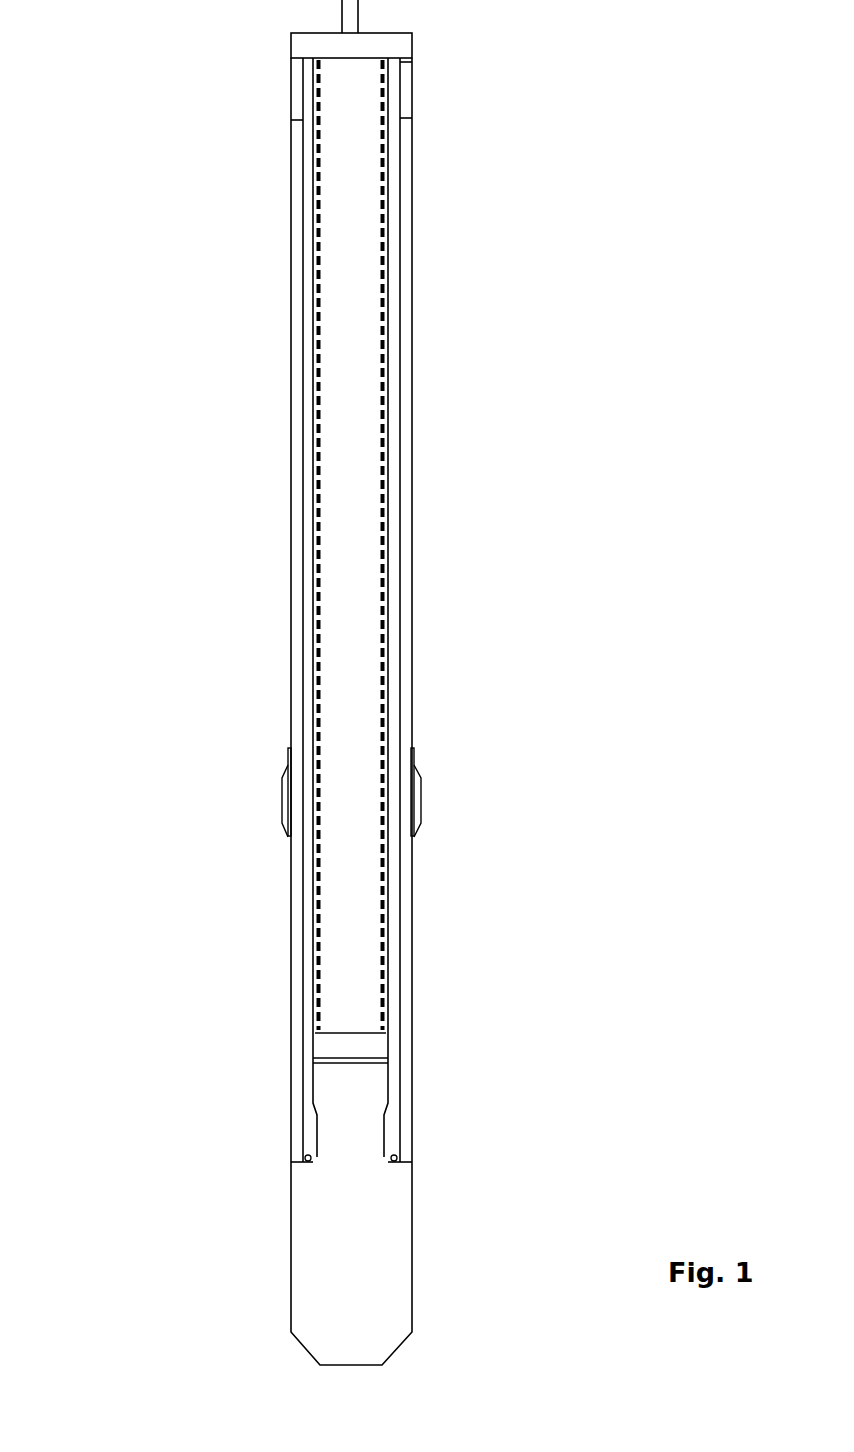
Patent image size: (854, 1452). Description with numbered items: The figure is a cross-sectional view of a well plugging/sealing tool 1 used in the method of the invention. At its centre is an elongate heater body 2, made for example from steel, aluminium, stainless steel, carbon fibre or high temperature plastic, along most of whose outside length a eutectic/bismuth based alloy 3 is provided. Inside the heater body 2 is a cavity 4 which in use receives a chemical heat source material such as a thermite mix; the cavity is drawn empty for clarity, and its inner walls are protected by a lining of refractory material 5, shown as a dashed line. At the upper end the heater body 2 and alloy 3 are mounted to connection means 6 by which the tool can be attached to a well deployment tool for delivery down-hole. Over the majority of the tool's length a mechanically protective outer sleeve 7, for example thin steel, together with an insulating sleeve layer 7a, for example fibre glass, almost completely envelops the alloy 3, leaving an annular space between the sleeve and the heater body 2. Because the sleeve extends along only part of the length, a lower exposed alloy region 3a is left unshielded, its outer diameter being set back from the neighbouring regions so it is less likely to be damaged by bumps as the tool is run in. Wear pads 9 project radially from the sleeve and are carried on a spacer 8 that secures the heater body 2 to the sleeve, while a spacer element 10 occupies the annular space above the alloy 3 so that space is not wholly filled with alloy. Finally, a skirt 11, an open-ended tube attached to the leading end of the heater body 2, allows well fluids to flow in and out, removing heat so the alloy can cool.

The well plugging/sealing tool 1 is at (206, 271).
The heater body 2 is at (390, 262).
The eutectic/bismuth based alloy 3 is at (299, 470).
The exposed alloy region 3a is at (300, 1045).
The cavity 4 is at (363, 952).
The refractory material lining 5 is at (398, 585).
The connection means 6 is at (358, 22).
The sleeve 7 is at (411, 92).
The insulating sleeve layer 7a is at (411, 116).
The spacer 8 is at (410, 754).
The wear pads 9 is at (420, 803).
The spacer element 10 is at (297, 108).
The skirt 11 is at (404, 1193).